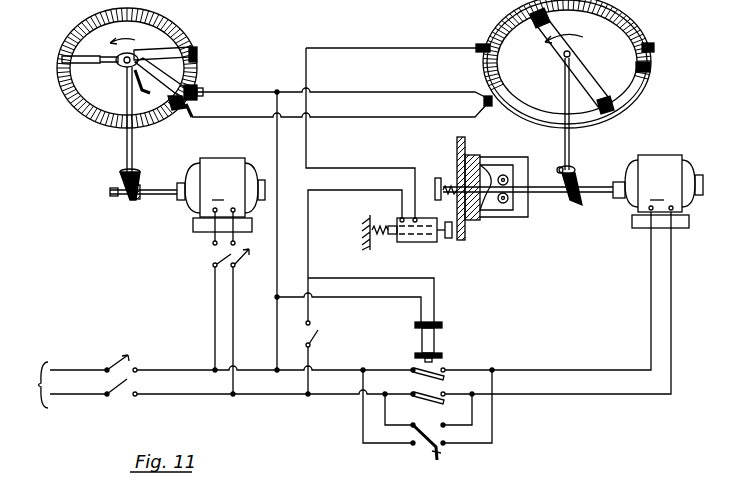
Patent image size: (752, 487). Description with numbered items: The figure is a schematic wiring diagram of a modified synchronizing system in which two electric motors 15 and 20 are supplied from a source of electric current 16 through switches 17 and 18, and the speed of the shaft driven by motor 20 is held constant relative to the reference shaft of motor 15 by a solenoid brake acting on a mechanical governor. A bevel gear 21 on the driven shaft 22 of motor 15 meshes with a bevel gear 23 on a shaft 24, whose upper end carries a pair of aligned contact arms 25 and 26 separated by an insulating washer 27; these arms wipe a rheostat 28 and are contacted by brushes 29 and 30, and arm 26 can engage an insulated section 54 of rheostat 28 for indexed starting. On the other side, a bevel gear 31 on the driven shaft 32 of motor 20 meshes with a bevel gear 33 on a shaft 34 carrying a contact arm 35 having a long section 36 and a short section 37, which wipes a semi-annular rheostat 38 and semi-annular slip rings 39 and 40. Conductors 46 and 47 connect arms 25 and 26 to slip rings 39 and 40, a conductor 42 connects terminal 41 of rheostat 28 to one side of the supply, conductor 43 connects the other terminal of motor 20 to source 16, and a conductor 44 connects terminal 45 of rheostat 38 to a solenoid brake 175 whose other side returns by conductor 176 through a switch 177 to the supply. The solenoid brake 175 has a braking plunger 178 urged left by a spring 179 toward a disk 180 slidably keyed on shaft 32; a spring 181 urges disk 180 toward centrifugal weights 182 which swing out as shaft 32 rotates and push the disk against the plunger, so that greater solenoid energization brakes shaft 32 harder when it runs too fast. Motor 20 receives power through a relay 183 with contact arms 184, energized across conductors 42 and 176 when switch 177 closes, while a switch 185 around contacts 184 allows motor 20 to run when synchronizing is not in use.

The electric motor 15 is at (221, 201).
The source of electric current 16 is at (209, 385).
The switch 17 is at (118, 362).
The switch 18 is at (213, 264).
The electric motor 20 is at (658, 191).
The bevel gear 21 is at (137, 206).
The driven shaft 22 is at (113, 198).
The bevel gear 23 is at (120, 176).
The shaft 24 is at (125, 143).
The contact arm 25 is at (60, 66).
The contact arm 26 is at (198, 54).
The insulating washer 27 is at (113, 68).
The rheostat 28 is at (180, 9).
The brush 29 is at (153, 108).
The brush 30 is at (198, 72).
The bevel gear 31 is at (571, 208).
The driven shaft 32 is at (600, 196).
The bevel gear 33 is at (579, 174).
The shaft 34 is at (575, 135).
The contact arm 35 is at (580, 57).
The long section 36 is at (590, 80).
The short section 37 is at (545, 45).
The rheostat 38 is at (652, 48).
The slip ring 39 is at (651, 70).
The slip ring 40 is at (638, 95).
The terminal 41 is at (204, 92).
The conductor 42 is at (277, 141).
The conductor 43 is at (673, 284).
The conductor 44 is at (308, 158).
The terminal 45 is at (478, 44).
The conductor 46 is at (355, 99).
The conductor 47 is at (237, 120).
The insulated section 54 is at (172, 118).
The solenoid brake 175 is at (398, 245).
The conductor 176 is at (309, 268).
The switch 177 is at (316, 335).
The braking plunger 178 is at (449, 240).
The spring 179 is at (376, 224).
The disk 180 is at (456, 150).
The spring 181 is at (448, 178).
The centrifugal weights 182 is at (508, 160).
The relay 183 is at (436, 341).
The contact arms 184 is at (415, 396).
The switch 185 is at (428, 452).